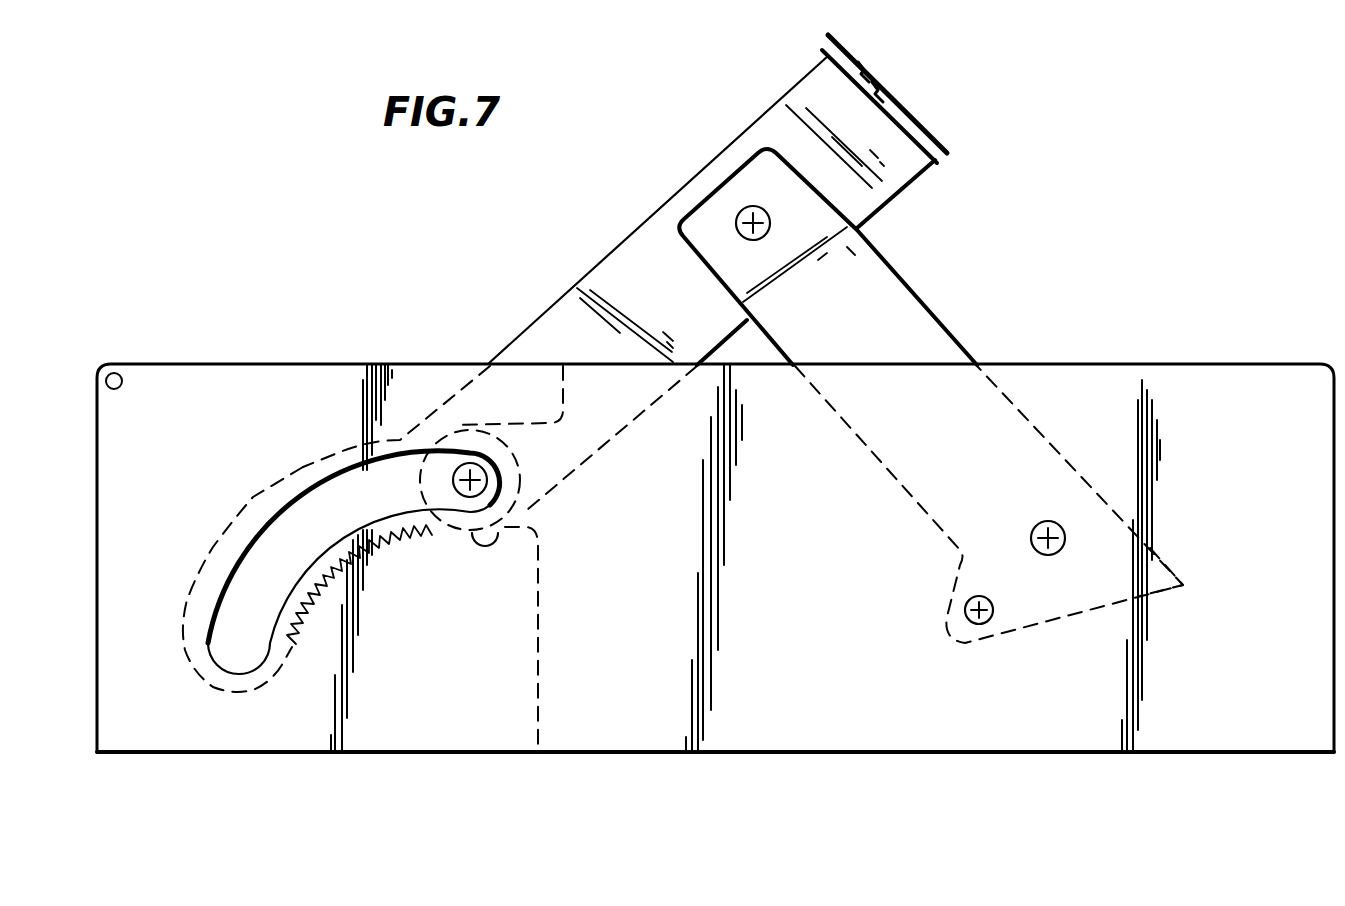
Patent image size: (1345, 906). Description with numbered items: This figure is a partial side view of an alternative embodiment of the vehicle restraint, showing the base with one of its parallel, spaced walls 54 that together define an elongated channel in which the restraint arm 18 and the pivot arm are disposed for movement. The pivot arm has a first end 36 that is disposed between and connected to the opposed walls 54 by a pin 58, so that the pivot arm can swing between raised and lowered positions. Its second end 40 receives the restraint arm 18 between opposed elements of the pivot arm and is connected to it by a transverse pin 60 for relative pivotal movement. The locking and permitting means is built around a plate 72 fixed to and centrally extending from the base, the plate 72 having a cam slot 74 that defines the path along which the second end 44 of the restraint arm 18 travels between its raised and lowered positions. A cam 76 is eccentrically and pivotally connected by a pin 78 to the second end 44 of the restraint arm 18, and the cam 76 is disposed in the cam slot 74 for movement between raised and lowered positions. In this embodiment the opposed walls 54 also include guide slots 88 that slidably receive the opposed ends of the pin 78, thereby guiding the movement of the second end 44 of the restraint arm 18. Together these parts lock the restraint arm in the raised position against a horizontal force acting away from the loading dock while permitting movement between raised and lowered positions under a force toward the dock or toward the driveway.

The restraint arm 18 is at (893, 170).
The second end of pivot arm 40 is at (778, 144).
The transverse pin 60 is at (753, 206).
The second end of restraint arm 44 is at (440, 410).
The parallel, spaced walls 54 is at (1192, 364).
The cam slot 74 is at (341, 432).
The guide slots 88 is at (310, 523).
The pin 78 is at (470, 460).
The cam 76 is at (525, 456).
The plate 72 is at (547, 580).
The pin 58 is at (1036, 526).
The first end of pivot arm 36 is at (1158, 557).